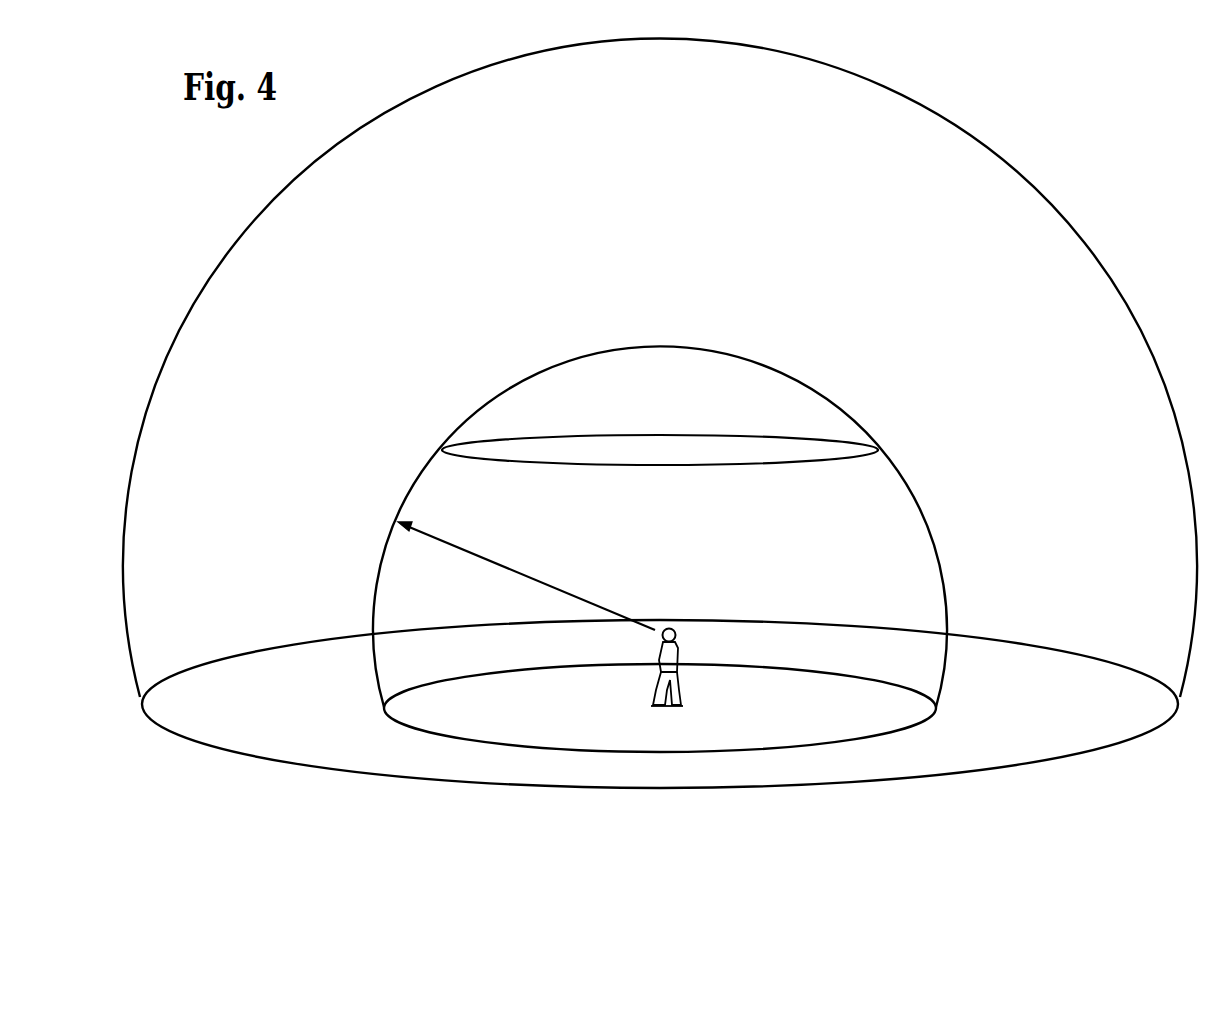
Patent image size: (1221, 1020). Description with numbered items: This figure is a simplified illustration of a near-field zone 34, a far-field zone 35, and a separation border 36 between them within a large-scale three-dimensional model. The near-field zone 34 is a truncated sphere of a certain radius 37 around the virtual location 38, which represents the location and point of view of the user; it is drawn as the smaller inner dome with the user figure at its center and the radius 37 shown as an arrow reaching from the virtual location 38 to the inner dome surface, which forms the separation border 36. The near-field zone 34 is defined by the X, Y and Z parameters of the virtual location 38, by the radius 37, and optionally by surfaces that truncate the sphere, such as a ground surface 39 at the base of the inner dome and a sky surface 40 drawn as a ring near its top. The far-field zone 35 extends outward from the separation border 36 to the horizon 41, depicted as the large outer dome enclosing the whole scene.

The horizon 41 is at (1015, 175).
The far-field zone 35 is at (1032, 272).
The separation border 36 is at (901, 478).
The near-field zone 34 is at (881, 565).
The sky surface 40 is at (577, 437).
The radius 37 is at (530, 578).
The virtual location 38 is at (681, 632).
The ground surface 39 is at (497, 742).